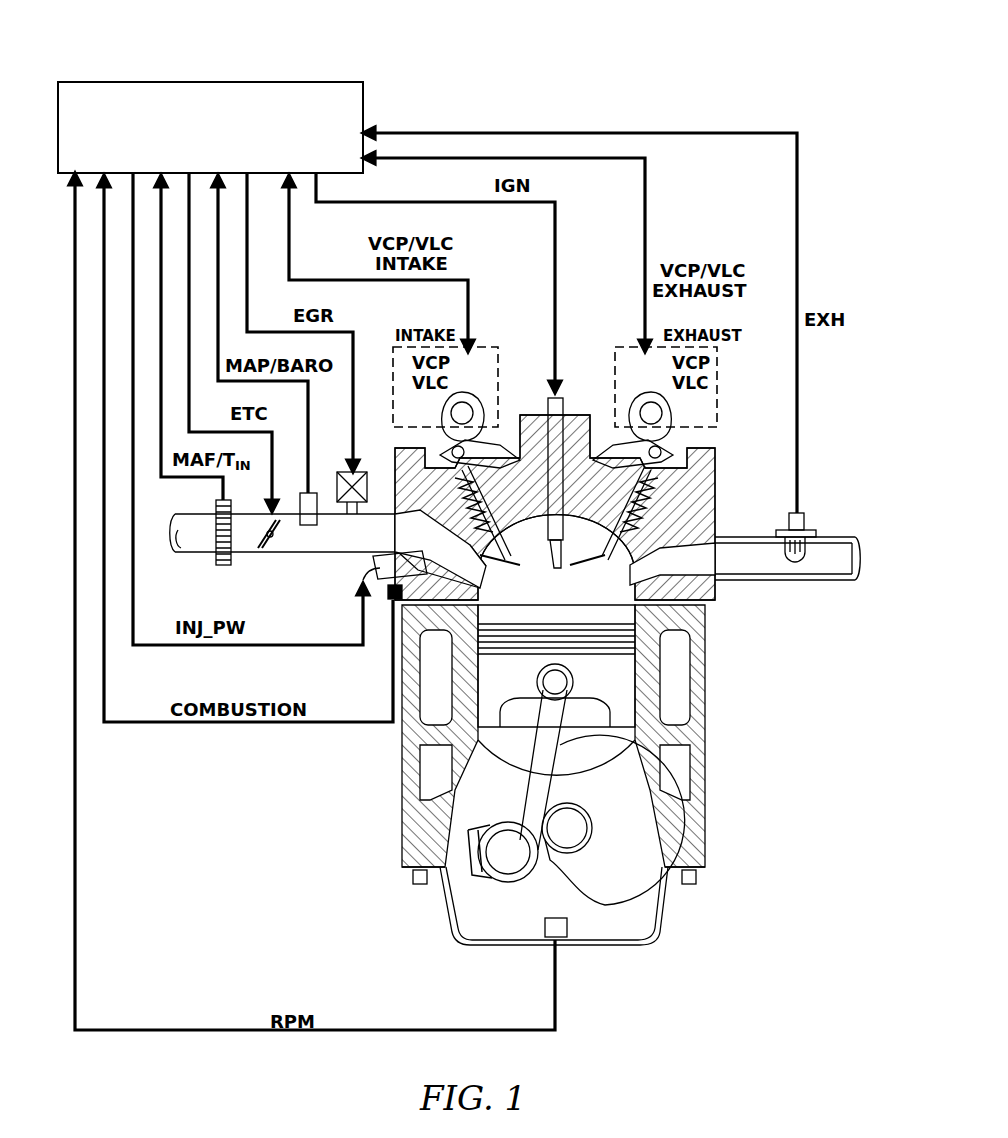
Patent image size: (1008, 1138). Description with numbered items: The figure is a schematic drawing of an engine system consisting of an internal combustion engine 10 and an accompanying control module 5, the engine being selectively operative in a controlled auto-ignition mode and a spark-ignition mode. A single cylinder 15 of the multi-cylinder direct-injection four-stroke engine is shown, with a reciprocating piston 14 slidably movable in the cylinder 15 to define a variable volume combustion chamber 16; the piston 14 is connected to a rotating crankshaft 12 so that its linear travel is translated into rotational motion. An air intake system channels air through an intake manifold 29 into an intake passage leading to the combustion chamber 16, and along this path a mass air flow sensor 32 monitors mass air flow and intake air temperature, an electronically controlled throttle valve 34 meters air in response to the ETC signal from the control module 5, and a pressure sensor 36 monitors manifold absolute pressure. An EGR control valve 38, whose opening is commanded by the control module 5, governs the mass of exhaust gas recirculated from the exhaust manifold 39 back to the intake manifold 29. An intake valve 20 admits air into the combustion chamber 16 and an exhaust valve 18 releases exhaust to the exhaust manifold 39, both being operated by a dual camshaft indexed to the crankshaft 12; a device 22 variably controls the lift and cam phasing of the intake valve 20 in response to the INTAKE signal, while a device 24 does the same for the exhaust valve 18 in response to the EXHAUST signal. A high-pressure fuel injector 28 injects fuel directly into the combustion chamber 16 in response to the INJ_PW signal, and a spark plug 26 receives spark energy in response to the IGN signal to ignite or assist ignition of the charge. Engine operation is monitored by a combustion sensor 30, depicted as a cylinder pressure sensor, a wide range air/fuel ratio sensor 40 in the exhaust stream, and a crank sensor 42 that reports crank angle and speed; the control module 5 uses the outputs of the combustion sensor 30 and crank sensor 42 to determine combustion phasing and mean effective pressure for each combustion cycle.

The control module 5 is at (322, 82).
The internal combustion engine 10 is at (705, 740).
The crankshaft 12 is at (612, 885).
The piston 14 is at (556, 666).
The cylinder 15 is at (468, 692).
The combustion chamber 16 is at (556, 562).
The exhaust valve 18 is at (620, 570).
The intake valve 20 is at (470, 560).
The intake VCP/VLC device 22 is at (490, 350).
The exhaust VCP/VLC device 24 is at (712, 408).
The spark plug 26 is at (562, 400).
The fuel injector 28 is at (365, 585).
The intake manifold 29 is at (382, 520).
The combustion sensor 30 is at (392, 600).
The mass air flow sensor 32 is at (223, 565).
The throttle valve 34 is at (267, 548).
The pressure sensor 36 is at (306, 525).
The EGR control valve 38 is at (347, 502).
The exhaust manifold 39 is at (700, 550).
The wide range air/fuel ratio sensor 40 is at (806, 522).
The crank sensor 42 is at (547, 932).